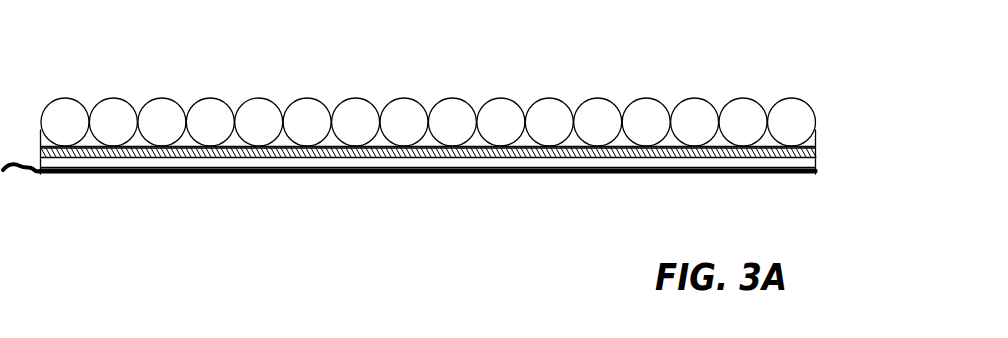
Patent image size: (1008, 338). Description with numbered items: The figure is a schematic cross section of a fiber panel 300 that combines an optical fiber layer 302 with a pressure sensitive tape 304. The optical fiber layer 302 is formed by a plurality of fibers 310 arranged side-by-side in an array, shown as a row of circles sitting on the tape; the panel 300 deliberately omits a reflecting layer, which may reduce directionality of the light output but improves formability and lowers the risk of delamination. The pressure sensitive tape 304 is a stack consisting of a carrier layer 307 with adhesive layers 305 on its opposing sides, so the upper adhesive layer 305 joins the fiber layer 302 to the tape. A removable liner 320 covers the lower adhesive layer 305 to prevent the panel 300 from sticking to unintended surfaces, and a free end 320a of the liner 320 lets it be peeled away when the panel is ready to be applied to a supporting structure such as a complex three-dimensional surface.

The panel 300 is at (135, 42).
The optical fiber layer 302 is at (810, 89).
The pressure sensitive tape 304 is at (865, 105).
The adhesive layer 305 is at (817, 143).
The carrier layer 307 is at (816, 151).
The fibers 310 is at (160, 113).
The removable liner 320 is at (462, 174).
The free end 320a is at (28, 182).